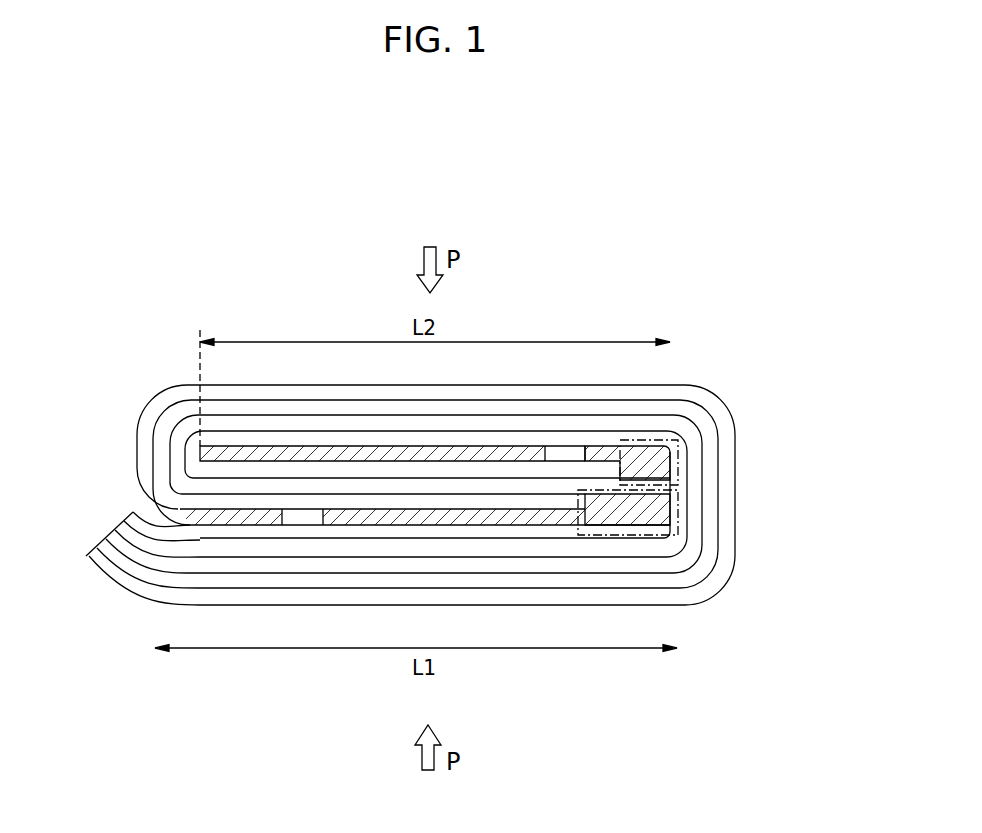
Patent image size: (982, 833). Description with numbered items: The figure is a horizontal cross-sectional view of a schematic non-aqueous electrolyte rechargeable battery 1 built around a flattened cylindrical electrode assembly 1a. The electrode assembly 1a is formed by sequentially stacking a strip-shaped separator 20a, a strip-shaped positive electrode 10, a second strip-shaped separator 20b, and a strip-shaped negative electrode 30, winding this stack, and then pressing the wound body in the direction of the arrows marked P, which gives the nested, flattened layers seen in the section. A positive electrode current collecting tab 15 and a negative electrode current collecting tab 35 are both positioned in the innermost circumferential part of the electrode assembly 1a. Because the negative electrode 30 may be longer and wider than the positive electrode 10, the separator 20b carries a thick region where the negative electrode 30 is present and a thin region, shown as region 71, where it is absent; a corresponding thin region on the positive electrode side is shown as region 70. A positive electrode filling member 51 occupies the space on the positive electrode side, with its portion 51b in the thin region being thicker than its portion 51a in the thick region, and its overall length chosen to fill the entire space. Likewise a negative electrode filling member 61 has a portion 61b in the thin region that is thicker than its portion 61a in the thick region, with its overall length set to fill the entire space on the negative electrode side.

The non-aqueous electrolyte rechargeable battery 1 is at (719, 330).
The electrode assembly 1a is at (722, 406).
The strip-shaped positive electrode 10 is at (508, 500).
The positive electrode current collecting tab 15 is at (307, 520).
The strip-shaped separator 20a is at (278, 535).
The strip-shaped separator 20b is at (555, 488).
The strip-shaped negative electrode 30 is at (313, 440).
The negative electrode current collecting tab 35 is at (565, 455).
The positive electrode filling member 51 is at (349, 537).
The portion of positive electrode filling member in thick region 51a is at (226, 515).
The portion of positive electrode filling member in thin region 51b is at (628, 517).
The negative electrode filling member 61 is at (488, 440).
The portion of negative electrode filling member in thick region 61a is at (258, 460).
The portion of negative electrode filling member in thin region 61b is at (642, 460).
The thin region 70 is at (680, 512).
The thin region 71 is at (680, 462).